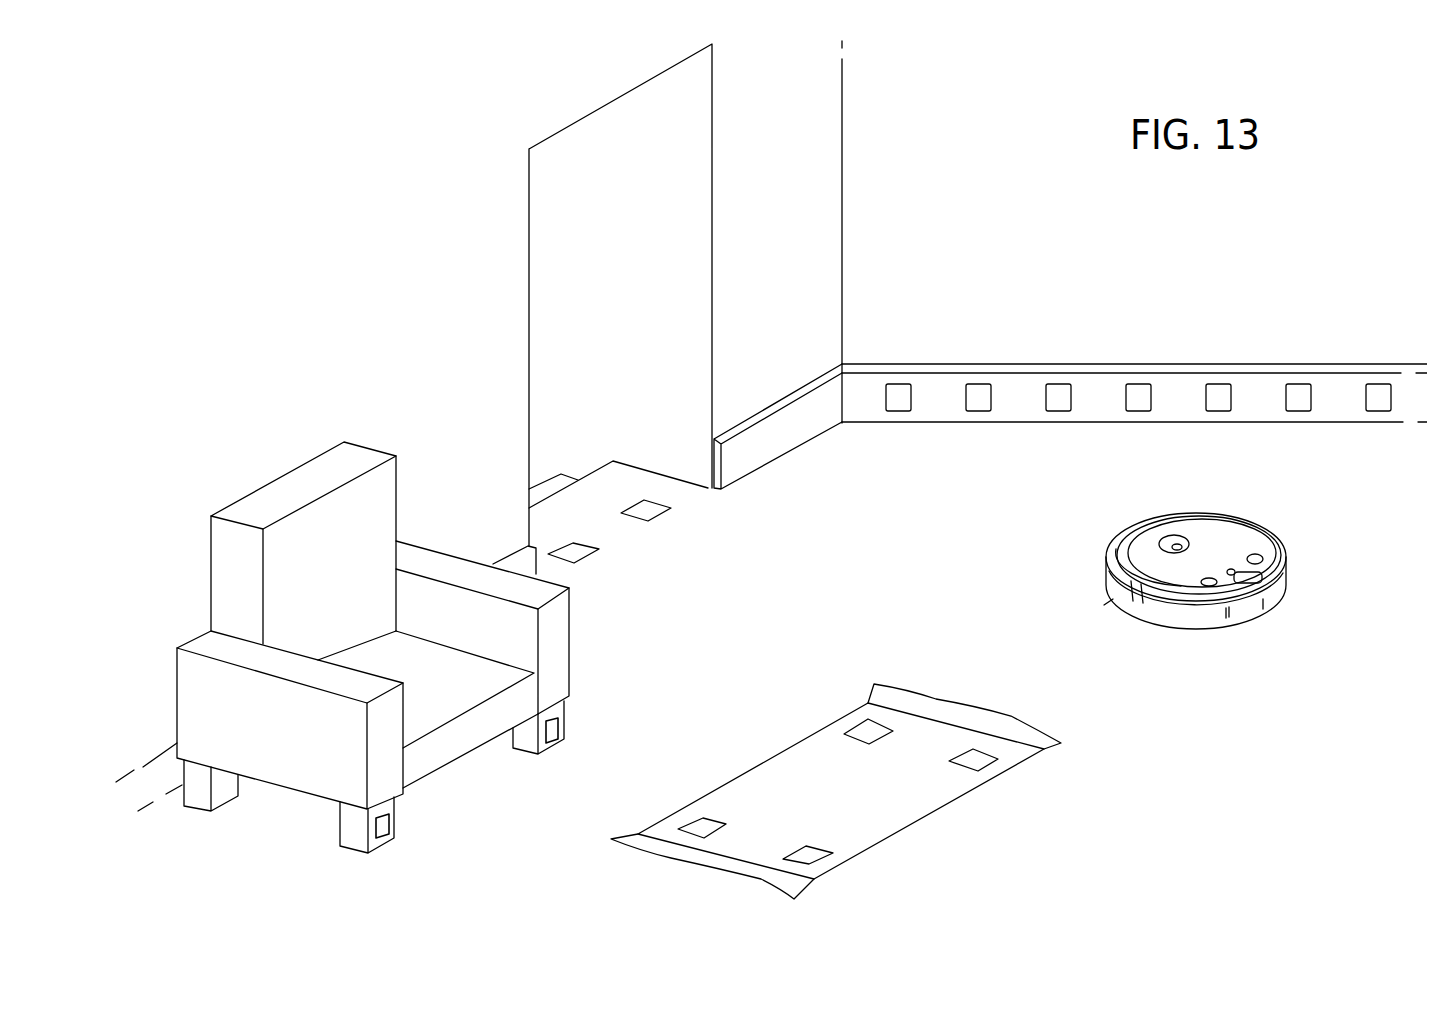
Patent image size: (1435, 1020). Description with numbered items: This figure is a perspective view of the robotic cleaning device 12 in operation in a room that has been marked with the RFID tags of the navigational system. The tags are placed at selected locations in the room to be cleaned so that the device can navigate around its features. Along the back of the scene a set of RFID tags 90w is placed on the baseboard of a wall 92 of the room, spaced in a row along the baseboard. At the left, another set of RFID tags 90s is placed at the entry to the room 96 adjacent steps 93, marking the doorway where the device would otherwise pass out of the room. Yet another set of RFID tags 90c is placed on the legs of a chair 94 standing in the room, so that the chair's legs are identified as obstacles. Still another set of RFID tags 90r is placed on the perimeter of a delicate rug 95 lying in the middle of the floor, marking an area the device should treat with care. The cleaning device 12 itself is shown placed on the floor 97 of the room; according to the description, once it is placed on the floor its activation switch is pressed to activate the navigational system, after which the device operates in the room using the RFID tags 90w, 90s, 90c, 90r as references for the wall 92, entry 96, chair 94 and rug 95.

The cleaning device 12 is at (1278, 518).
The wall 92 is at (478, 412).
The steps 93 is at (616, 434).
The chair 94 is at (572, 638).
The delicate rug 95 is at (902, 797).
The entry to the room 96 is at (685, 132).
The floor 97 is at (939, 514).
The RFID tags 90w is at (898, 390).
The RFID tags 90s is at (582, 553).
The RFID tags 90c is at (390, 823).
The RFID tags 90r is at (862, 727).